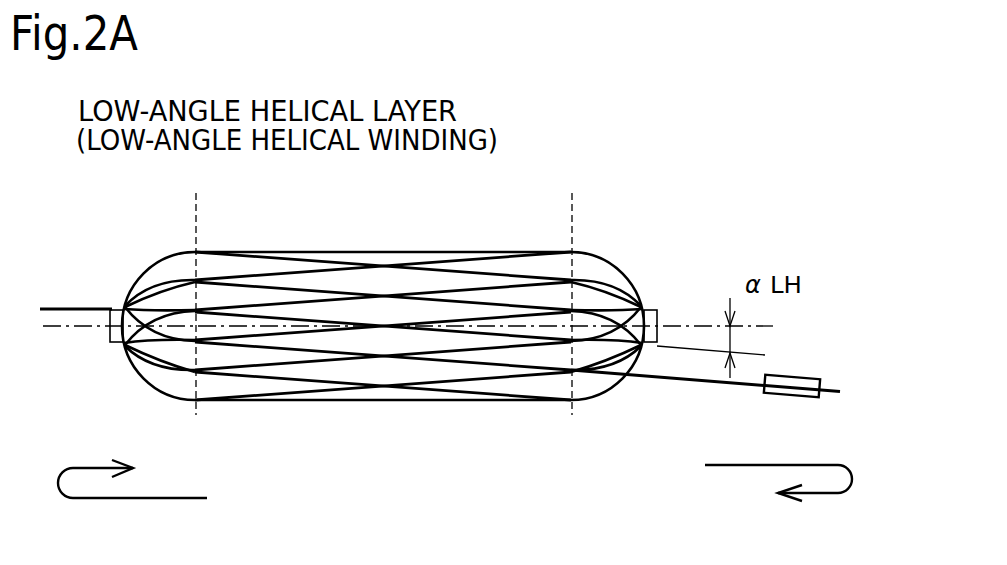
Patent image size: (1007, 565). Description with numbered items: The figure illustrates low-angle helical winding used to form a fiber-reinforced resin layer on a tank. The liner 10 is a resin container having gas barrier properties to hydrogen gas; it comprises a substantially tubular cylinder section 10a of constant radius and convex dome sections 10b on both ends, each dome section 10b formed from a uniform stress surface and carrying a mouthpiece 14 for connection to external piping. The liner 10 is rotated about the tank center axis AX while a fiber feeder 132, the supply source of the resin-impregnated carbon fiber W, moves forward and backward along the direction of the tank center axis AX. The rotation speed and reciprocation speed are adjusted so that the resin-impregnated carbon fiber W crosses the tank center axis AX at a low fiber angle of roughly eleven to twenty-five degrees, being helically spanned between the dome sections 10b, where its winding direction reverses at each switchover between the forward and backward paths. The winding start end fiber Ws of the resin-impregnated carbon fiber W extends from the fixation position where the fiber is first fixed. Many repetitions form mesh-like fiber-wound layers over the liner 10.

The liner 10 is at (585, 253).
The cylinder section 10a is at (572, 223).
The dome section 10b is at (142, 378).
The mouthpiece 14 is at (110, 310).
The fiber feeder 132 is at (797, 388).
The resin-impregnated carbon fiber W is at (675, 381).
The winding start end fiber Ws is at (76, 309).
The tank center axis AX is at (426, 328).